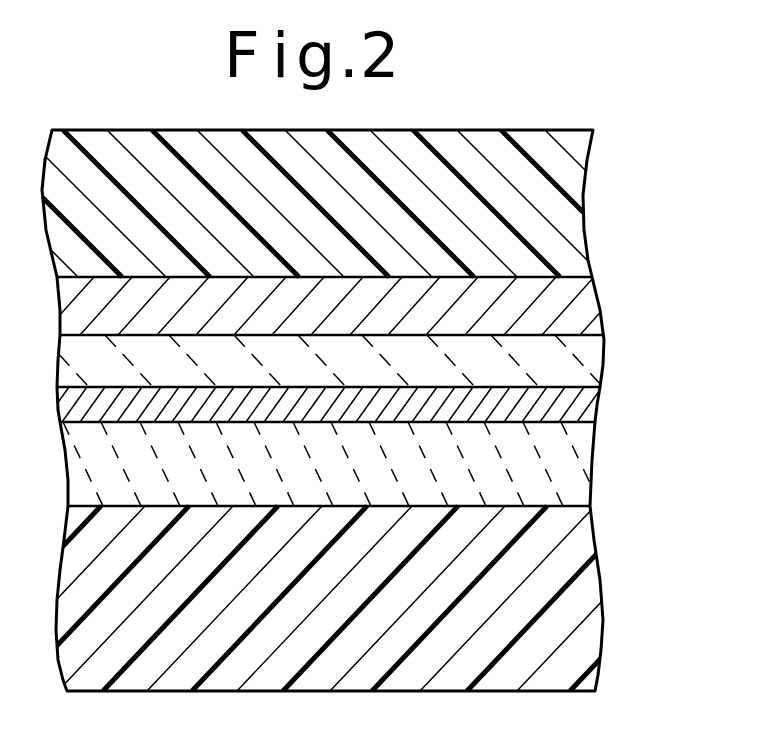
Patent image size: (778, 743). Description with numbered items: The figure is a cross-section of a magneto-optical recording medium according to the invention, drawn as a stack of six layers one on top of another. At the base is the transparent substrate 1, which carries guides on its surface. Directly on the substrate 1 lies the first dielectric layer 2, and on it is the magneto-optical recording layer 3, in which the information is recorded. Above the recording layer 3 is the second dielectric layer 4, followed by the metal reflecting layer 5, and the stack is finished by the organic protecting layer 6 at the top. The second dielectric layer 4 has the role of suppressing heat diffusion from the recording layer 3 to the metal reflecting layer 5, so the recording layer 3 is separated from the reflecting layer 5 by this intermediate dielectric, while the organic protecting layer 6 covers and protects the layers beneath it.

The transparent substrate 1 is at (588, 588).
The first dielectric layer 2 is at (582, 460).
The magneto-optical recording layer 3 is at (585, 400).
The second dielectric layer 4 is at (590, 356).
The metal reflecting layer 5 is at (586, 302).
The organic protecting layer 6 is at (578, 190).